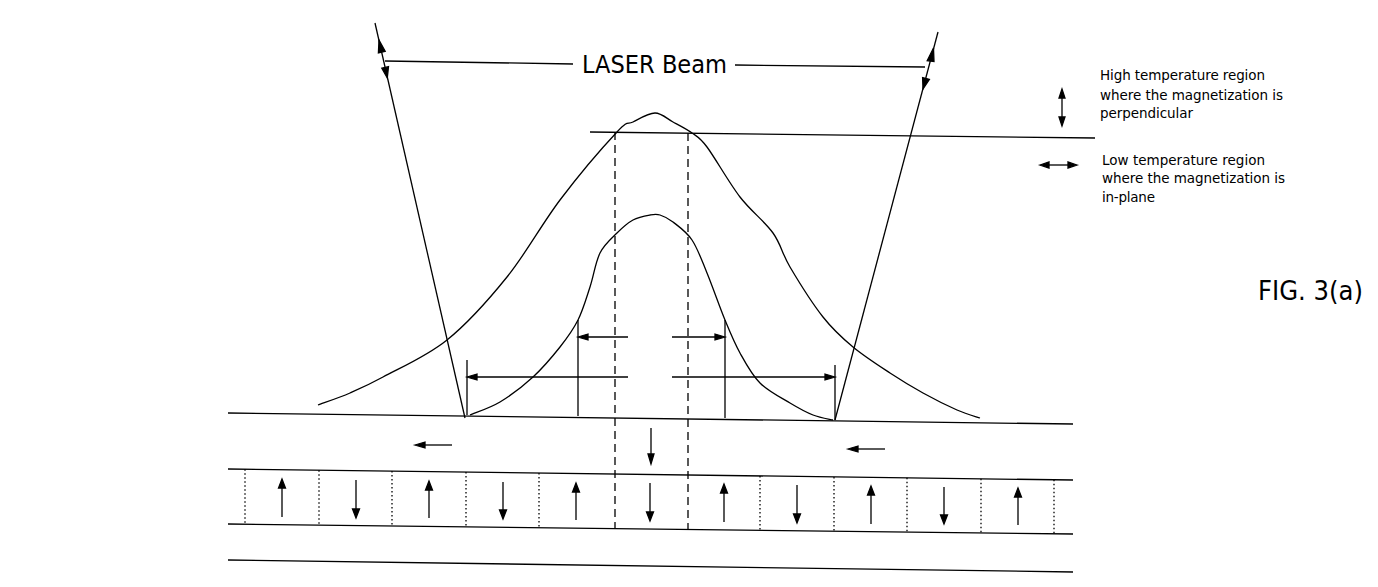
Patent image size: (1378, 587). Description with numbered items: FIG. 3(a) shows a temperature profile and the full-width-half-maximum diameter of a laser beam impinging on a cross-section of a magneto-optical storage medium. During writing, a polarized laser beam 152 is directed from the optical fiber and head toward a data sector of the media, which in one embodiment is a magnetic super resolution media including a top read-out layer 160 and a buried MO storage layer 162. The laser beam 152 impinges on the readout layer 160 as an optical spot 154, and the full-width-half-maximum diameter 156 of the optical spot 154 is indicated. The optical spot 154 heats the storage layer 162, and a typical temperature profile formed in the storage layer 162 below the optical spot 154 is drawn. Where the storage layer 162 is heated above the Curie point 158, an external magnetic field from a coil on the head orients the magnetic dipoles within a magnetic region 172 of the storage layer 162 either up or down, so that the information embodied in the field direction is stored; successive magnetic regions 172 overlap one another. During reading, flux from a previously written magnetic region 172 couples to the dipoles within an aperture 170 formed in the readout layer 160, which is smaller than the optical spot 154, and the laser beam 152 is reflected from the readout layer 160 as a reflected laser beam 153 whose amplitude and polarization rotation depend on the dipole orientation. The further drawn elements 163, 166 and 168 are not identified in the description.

The polarized laser beam 152 is at (387, 73).
The reflected laser beam 153 is at (380, 50).
The optical spot 154 is at (651, 390).
The full-width-half-maximum diameter 156 is at (651, 369).
The Curie point 158 is at (675, 131).
The top read-out layer 160 is at (1047, 459).
The buried MO storage layer 162 is at (1073, 515).
The substrate 163 is at (247, 543).
The upward magnetized domain 166 is at (276, 492).
The downward magnetized domain 168 is at (349, 492).
The aperture 170 is at (613, 440).
The magnetic region 172 is at (666, 497).